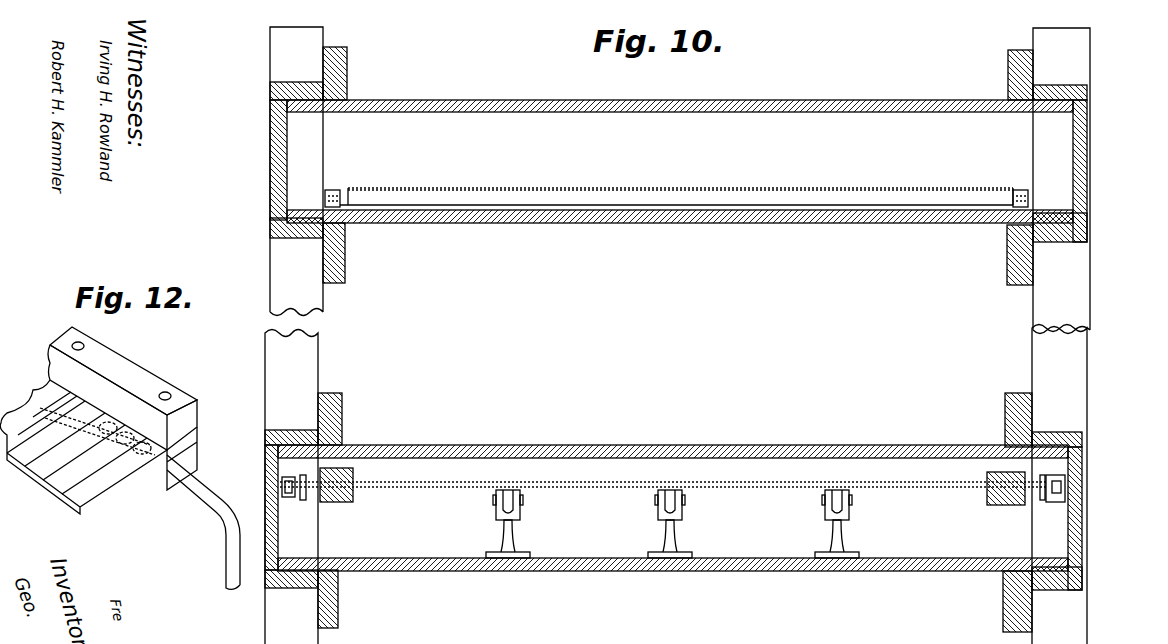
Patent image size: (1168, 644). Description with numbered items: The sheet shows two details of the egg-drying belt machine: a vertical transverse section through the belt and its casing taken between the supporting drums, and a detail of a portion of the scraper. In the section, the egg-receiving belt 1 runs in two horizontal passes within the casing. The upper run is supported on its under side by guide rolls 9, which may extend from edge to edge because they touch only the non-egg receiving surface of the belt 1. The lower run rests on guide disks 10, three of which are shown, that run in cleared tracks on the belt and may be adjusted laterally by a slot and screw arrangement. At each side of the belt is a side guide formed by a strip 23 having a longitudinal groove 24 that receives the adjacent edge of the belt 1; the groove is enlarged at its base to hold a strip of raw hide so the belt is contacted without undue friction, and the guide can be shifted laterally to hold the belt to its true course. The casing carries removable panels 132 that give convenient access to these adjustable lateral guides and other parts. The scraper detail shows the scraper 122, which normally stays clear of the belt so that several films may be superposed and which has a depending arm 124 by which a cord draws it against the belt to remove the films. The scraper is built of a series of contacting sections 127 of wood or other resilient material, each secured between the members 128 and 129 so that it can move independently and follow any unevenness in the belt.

In FIG. 10, the belt 1 is at (694, 187).
In FIG. 10, the guide rolls 9 is at (908, 199).
In FIG. 10, the guide disks 10 is at (498, 508).
In FIG. 10, the strip 23 is at (345, 503).
In FIG. 10, the longitudinal groove 24 is at (355, 488).
In FIG. 10, the removable panels 132 is at (268, 202).
In FIG. 12, the member 128 is at (138, 378).
In FIG. 12, the member 129 is at (190, 452).
In FIG. 12, the scraper 122 is at (118, 470).
In FIG. 12, the contacting sections 127 is at (72, 497).
In FIG. 12, the depending arm 124 is at (226, 556).